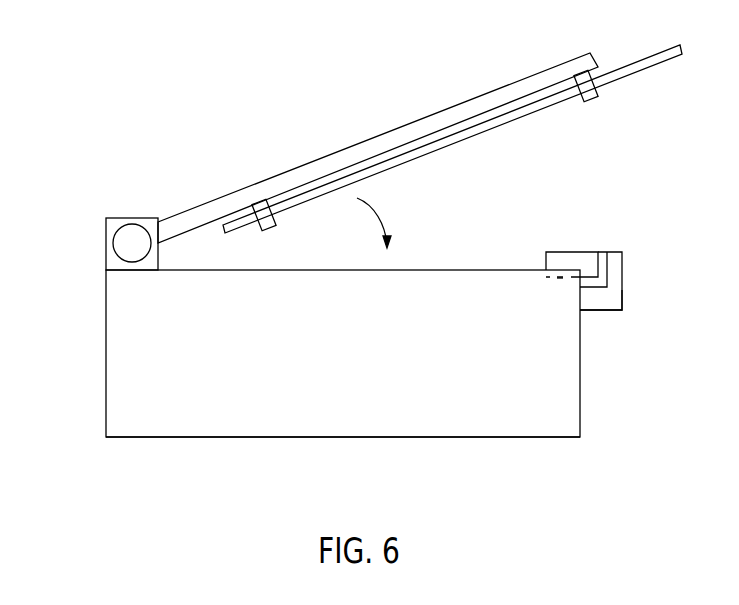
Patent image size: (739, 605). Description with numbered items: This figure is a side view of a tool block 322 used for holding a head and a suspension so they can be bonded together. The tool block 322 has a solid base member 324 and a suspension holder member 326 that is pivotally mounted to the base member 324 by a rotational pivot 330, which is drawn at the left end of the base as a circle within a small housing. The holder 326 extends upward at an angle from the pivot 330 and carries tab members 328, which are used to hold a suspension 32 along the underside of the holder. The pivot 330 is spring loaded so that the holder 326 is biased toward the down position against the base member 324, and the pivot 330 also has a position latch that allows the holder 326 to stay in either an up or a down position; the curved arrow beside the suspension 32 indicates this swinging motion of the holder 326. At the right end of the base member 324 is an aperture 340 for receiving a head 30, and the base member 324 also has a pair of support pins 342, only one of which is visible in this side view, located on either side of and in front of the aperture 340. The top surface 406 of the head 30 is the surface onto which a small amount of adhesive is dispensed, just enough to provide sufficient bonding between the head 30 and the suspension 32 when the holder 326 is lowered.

The tool block 322 is at (101, 493).
The solid base member 324 is at (345, 372).
The suspension holder member 326 is at (302, 168).
The tab members 328 is at (277, 222).
The rotational pivot 330 is at (112, 242).
The suspension 32 is at (465, 141).
The head 30 is at (572, 252).
The top surface 406 is at (592, 252).
The aperture 340 is at (563, 278).
The support pins 342 is at (623, 290).